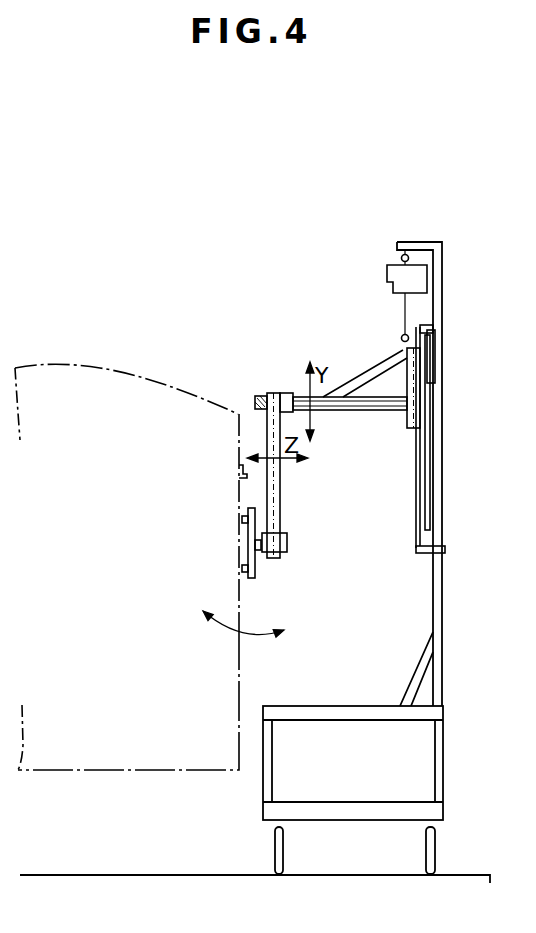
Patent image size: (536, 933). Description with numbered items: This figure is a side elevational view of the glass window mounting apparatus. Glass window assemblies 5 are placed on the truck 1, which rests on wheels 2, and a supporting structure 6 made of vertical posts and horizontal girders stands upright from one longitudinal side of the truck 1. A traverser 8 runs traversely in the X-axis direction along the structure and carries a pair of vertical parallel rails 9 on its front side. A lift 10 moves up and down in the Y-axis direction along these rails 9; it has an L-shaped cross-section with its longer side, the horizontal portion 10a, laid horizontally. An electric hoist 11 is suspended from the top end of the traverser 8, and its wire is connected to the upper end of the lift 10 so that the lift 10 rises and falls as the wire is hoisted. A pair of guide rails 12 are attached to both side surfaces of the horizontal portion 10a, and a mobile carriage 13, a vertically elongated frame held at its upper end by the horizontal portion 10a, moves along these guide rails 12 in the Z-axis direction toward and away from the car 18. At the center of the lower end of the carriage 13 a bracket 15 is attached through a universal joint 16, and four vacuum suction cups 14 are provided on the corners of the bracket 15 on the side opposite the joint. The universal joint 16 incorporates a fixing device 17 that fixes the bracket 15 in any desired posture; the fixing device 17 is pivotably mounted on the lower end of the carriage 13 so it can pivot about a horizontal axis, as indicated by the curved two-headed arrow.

The truck 1 is at (448, 775).
The wheels 2 is at (275, 855).
The glass window assemblies 5 is at (243, 477).
The supporting structure 6 is at (445, 620).
The traverser 8 is at (434, 352).
The vertical parallel rails 9 is at (416, 509).
The lift 10 is at (385, 370).
The horizontal portion of the lift 10a is at (389, 411).
The electric hoist 11 is at (393, 277).
The guide rails 12 is at (344, 412).
The mobile carriage 13 is at (280, 500).
The vacuum suction cups 14 is at (242, 568).
The bracket 15 is at (256, 576).
The universal joint 16 is at (259, 550).
The fixing device 17 is at (289, 545).
The car 18 is at (155, 375).